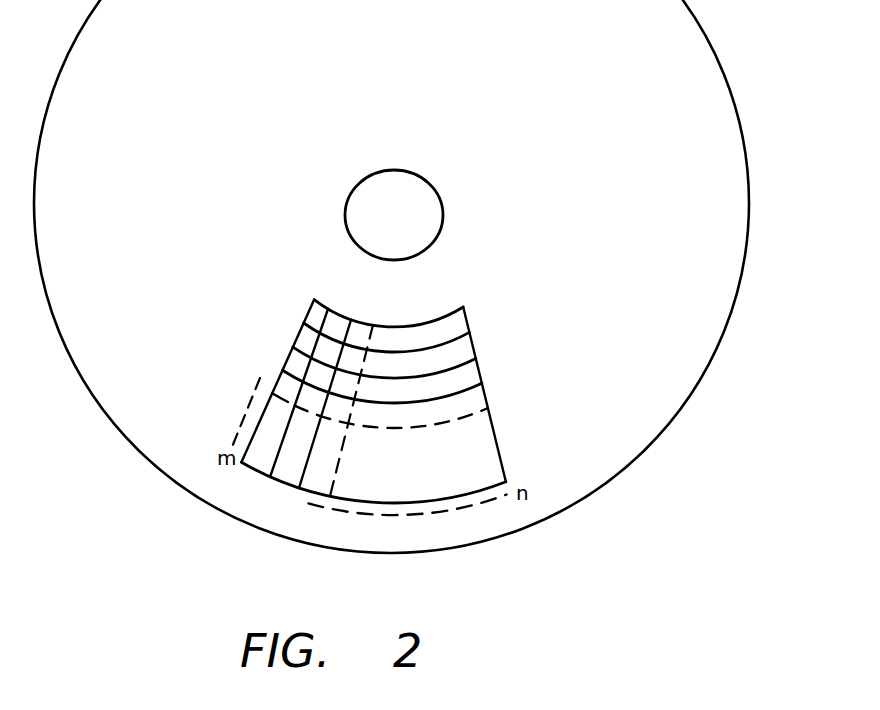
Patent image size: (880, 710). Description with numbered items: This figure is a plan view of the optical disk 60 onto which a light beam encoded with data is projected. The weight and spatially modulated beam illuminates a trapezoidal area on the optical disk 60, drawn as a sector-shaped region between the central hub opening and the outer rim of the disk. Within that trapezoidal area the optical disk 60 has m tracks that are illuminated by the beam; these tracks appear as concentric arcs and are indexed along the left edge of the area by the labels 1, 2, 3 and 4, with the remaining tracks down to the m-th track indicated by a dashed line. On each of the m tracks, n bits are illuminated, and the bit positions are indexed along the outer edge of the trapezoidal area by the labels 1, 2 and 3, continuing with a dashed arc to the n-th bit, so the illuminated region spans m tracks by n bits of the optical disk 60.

The optical disk 60 is at (741, 287).
The track/sector index 1 is at (346, 386).
The track/sector index 2 is at (363, 403).
The track/sector index 3 is at (389, 417).
The track index 4 is at (371, 380).